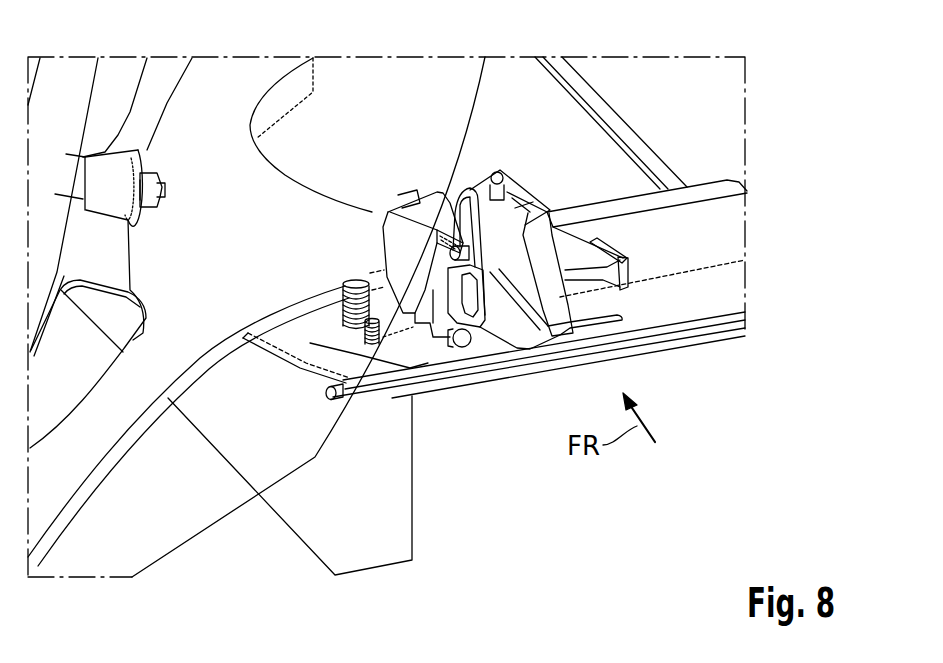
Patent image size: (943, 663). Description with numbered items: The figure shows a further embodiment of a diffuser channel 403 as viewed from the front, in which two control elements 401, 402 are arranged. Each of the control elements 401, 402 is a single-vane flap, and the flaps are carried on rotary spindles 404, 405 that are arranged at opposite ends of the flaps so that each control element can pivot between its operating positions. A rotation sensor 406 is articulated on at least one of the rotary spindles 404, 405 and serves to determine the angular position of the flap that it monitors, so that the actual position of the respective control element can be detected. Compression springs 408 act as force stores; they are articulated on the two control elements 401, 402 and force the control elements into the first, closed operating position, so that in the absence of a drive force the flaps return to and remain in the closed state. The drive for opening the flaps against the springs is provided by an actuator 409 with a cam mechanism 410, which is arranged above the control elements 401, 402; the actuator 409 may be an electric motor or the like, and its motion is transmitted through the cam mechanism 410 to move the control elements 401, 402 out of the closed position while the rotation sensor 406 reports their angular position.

The control element 401 is at (717, 233).
The control element 402 is at (718, 287).
The diffuser channel 403 is at (513, 114).
The rotary spindle 404 is at (743, 196).
The rotary spindle 405 is at (330, 398).
The rotation sensor 406 is at (275, 330).
The compression spring 408 is at (355, 282).
The actuator 409 is at (450, 345).
The cam mechanism 410 is at (507, 195).